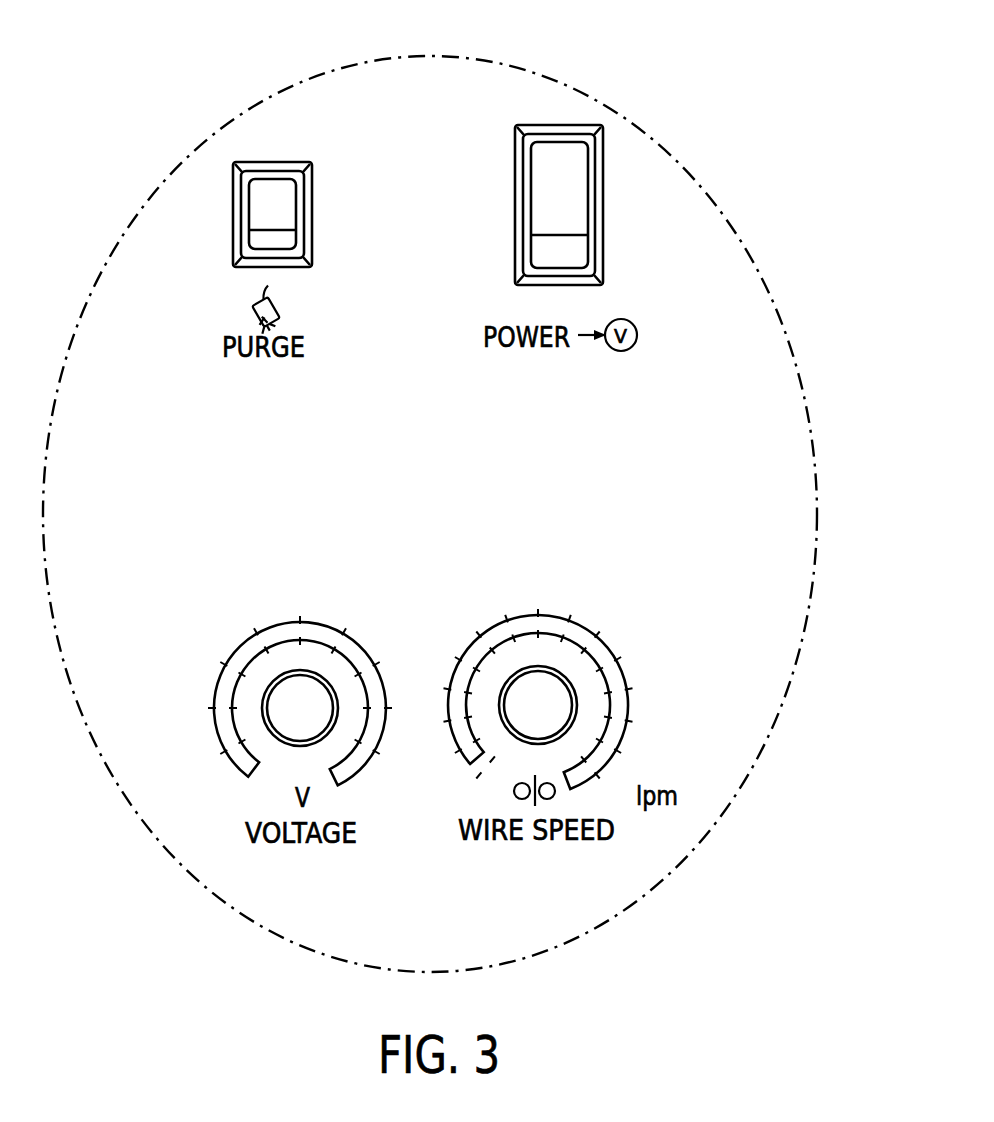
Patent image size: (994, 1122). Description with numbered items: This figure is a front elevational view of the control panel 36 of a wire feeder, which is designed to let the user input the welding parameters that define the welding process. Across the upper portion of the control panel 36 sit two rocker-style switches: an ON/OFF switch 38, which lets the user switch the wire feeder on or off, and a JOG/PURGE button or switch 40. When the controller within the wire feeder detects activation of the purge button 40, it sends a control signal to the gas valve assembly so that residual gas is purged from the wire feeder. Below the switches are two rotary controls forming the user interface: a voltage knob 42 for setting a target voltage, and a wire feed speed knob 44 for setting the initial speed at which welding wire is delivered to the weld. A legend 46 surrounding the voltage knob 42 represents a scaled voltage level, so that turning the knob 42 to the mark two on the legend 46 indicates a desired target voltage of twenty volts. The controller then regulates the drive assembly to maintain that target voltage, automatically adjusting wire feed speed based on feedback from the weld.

The control panel 36 is at (756, 110).
The ON/OFF switch 38 is at (515, 205).
The JOG/PURGE button or switch 40 is at (312, 212).
The voltage adjustment knob 42 is at (306, 664).
The wire feed speed knob 44 is at (533, 706).
The legend 46 is at (345, 598).